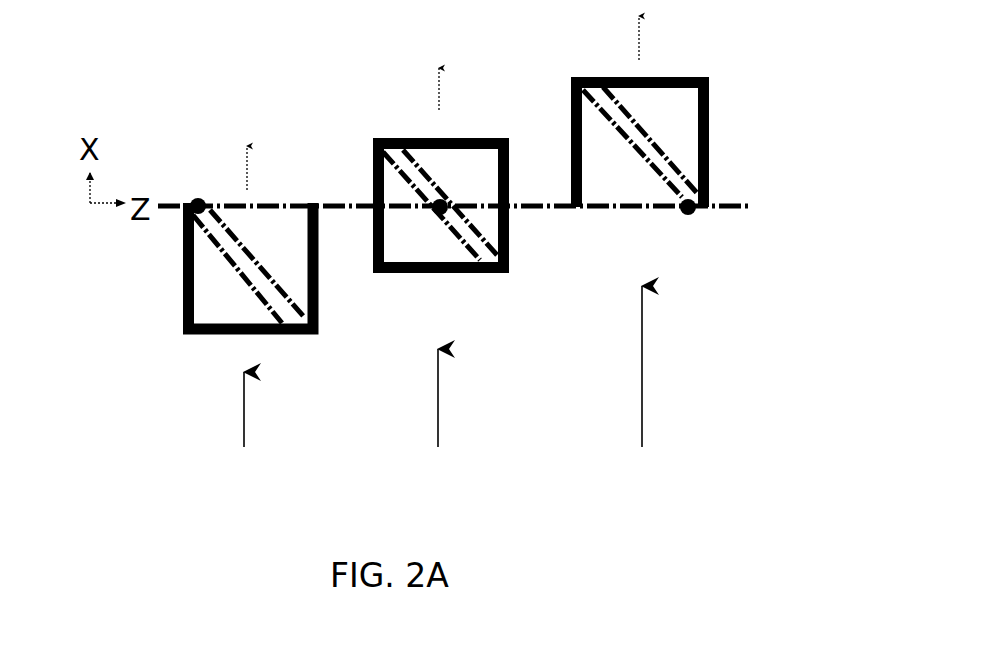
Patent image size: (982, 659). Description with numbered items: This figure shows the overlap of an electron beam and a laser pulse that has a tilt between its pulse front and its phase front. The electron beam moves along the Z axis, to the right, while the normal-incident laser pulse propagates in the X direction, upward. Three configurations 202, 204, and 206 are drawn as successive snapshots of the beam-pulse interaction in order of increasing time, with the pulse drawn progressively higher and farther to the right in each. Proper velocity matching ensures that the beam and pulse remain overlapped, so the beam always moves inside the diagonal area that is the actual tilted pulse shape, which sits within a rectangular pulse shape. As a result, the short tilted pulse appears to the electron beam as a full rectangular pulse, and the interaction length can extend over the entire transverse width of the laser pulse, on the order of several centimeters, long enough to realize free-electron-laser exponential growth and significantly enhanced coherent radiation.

The configuration 202 is at (240, 429).
The configuration 204 is at (443, 417).
The configuration 206 is at (638, 386).